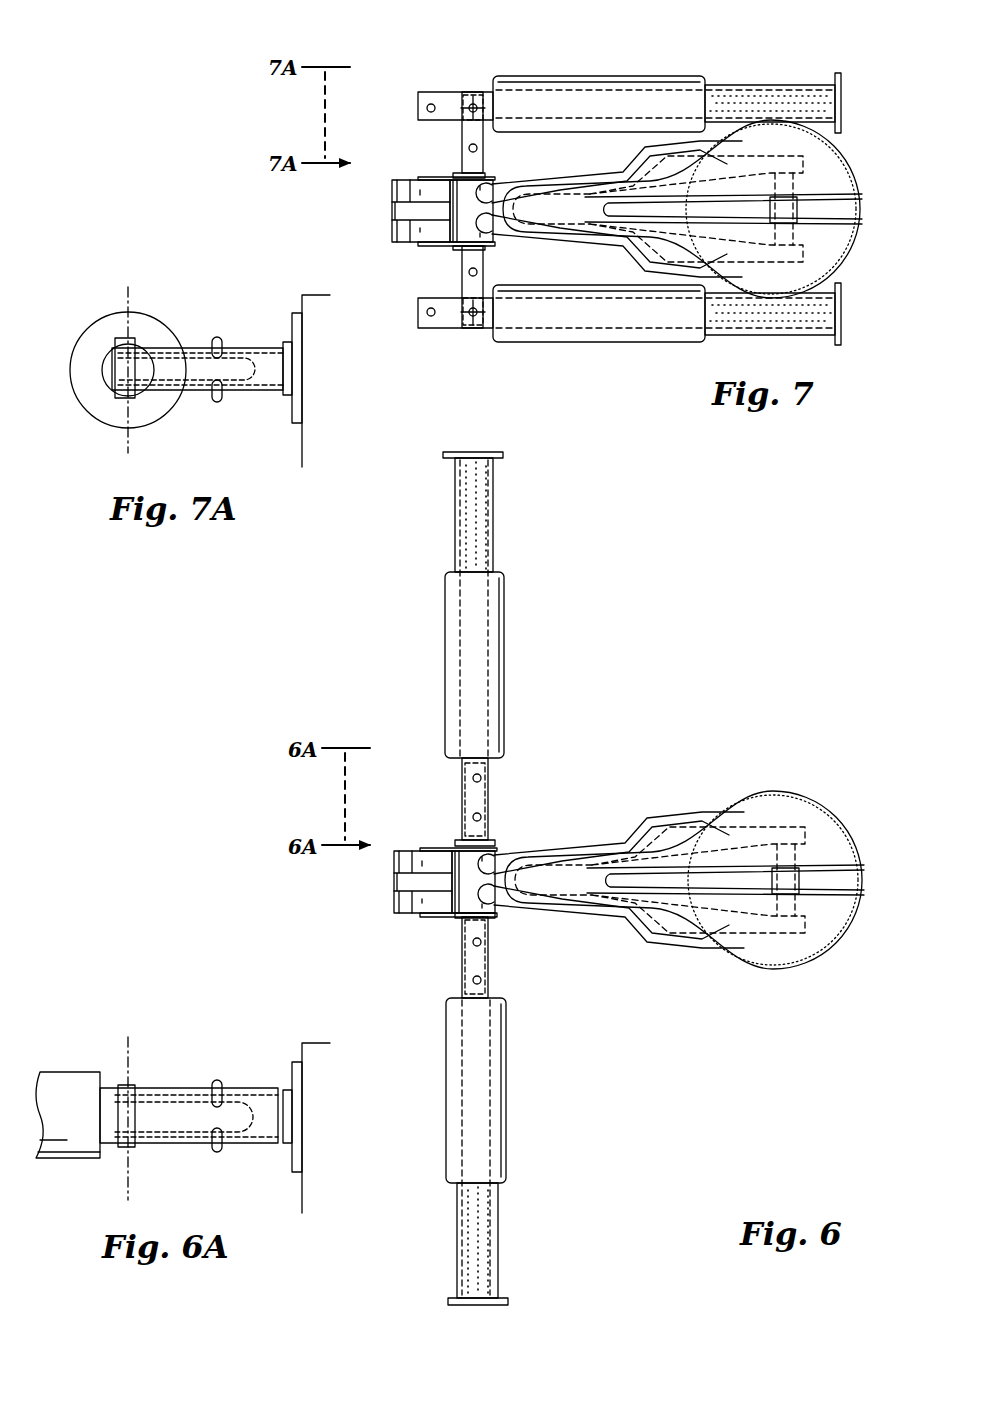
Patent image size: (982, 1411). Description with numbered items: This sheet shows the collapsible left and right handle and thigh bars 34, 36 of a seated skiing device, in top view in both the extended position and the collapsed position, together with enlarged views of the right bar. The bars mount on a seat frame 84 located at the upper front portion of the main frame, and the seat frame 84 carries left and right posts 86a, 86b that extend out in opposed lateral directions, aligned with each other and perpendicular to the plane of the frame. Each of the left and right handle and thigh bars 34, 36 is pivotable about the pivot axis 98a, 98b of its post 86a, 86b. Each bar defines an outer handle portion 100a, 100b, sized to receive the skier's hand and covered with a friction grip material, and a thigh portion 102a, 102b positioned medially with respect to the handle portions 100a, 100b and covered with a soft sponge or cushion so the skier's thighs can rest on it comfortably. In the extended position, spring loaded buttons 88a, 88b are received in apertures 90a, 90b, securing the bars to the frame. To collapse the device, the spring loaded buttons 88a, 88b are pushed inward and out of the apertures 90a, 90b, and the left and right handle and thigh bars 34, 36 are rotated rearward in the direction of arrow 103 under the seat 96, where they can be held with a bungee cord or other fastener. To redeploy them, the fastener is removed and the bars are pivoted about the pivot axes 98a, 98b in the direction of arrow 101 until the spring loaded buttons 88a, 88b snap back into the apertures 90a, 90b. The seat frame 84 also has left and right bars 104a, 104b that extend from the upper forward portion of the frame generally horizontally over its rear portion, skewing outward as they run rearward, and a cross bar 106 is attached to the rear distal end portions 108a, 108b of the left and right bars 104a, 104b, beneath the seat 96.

In FIG. 7, the left handle and thigh bar 34 is at (532, 347).
In FIG. 6, the left handle and thigh bar 34 is at (551, 1077).
In FIG. 7, the right handle and thigh bar 36 is at (533, 68).
In FIG. 6, the right handle and thigh bar 36 is at (549, 644).
In FIG. 7, the seat frame 84 is at (432, 174).
In FIG. 6, the seat frame 84 is at (652, 805).
In FIG. 7, the left post 86a is at (463, 258).
In FIG. 6, the left post 86a is at (475, 955).
In FIG. 7, the right post 86b is at (462, 128).
In FIG. 6, the right post 86b is at (475, 802).
In FIG. 7, the spring loaded button 88a is at (478, 272).
In FIG. 6, the spring loaded button 88a is at (473, 946).
In FIG. 7, the spring loaded button 88b is at (478, 148).
In FIG. 7A, the spring loaded button 88b is at (217, 337).
In FIG. 6, the spring loaded button 88b is at (478, 814).
In FIG. 6A, the spring loaded button 88b is at (217, 1080).
In FIG. 7, the aperture 90a is at (431, 317).
In FIG. 6, the aperture 90a is at (473, 943).
In FIG. 7, the aperture 90b is at (431, 103).
In FIG. 6, the aperture 90b is at (472, 820).
In FIG. 7, the seat 96 is at (826, 151).
In FIG. 6, the seat 96 is at (830, 932).
In FIG. 7, the pivot axis 98a is at (473, 318).
In FIG. 7, the pivot axis 98b is at (473, 103).
In FIG. 7A, the pivot axis 98b is at (130, 298).
In FIG. 6A, the pivot axis 98b is at (130, 1045).
In FIG. 6, the handle portion 100a is at (524, 1244).
In FIG. 6, the handle portion 100b is at (530, 452).
In FIG. 7, the arrow 101 is at (592, 32).
In FIG. 6, the thigh portion 102a is at (530, 1000).
In FIG. 6, the thigh portion 102b is at (522, 665).
In FIG. 6, the arrow 103 is at (712, 557).
In FIG. 6, the left bar 104a is at (740, 923).
In FIG. 6, the right bar 104b is at (737, 833).
In FIG. 6, the cross bar 106 is at (800, 853).
In FIG. 6, the rear distal end portion 108a is at (782, 938).
In FIG. 6, the rear distal end portion 108b is at (792, 822).